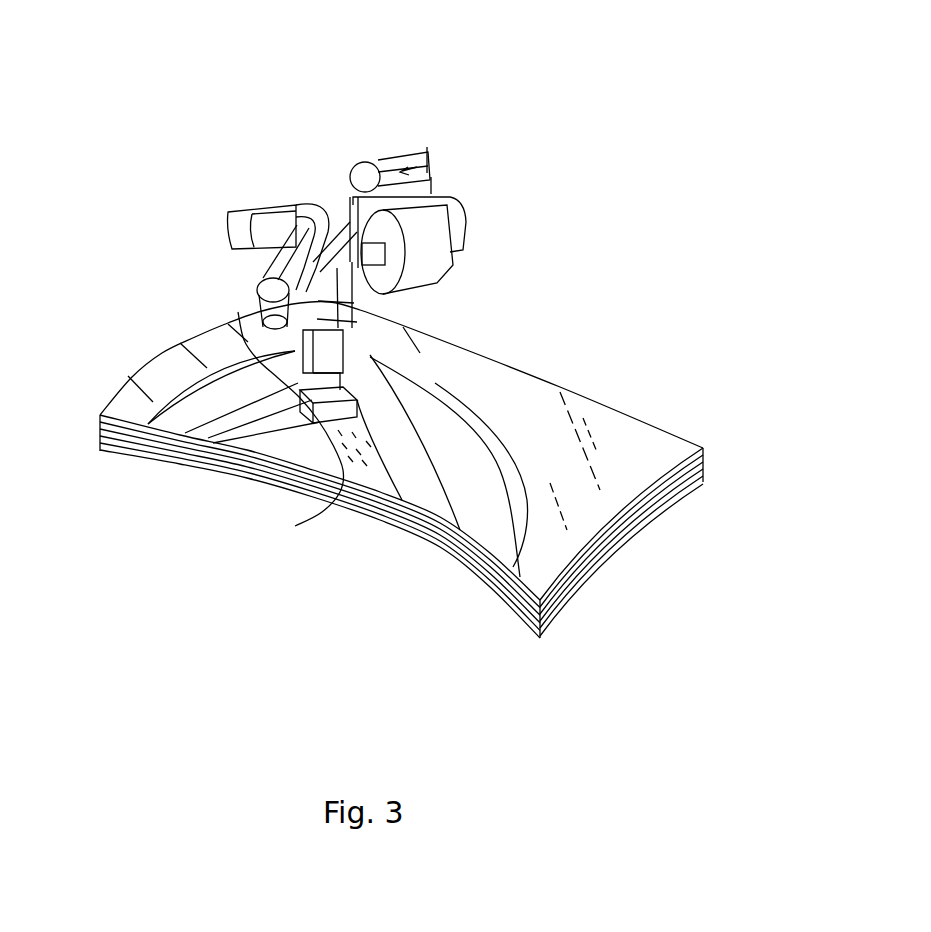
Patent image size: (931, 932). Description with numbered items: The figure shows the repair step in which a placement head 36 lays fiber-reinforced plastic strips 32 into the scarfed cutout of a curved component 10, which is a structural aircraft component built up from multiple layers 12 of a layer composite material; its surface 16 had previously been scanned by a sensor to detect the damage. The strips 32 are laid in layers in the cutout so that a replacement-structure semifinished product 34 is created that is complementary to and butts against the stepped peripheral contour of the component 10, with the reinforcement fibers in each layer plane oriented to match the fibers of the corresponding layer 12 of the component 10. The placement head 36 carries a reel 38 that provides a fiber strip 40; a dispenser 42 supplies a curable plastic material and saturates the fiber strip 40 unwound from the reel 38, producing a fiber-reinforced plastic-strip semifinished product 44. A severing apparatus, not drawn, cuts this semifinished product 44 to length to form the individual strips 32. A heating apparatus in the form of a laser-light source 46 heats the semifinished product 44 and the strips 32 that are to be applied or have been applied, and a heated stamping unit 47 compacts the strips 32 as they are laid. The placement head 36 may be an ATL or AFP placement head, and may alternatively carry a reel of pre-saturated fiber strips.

The component 10 is at (597, 366).
The layers 12 is at (680, 503).
The surface 16 is at (617, 447).
The fiber-reinforced plastic strips 32 is at (295, 526).
The replacement-structure semifinished product 34 is at (418, 545).
The placement head 36 is at (418, 122).
The reel 38 is at (433, 237).
The fiber strip 40 is at (340, 213).
The dispenser 42 is at (275, 196).
The fiber-reinforced plastic-strip semifinished product 44 is at (255, 330).
The laser-light source 46 is at (260, 297).
The heated stamping unit 47 is at (186, 446).